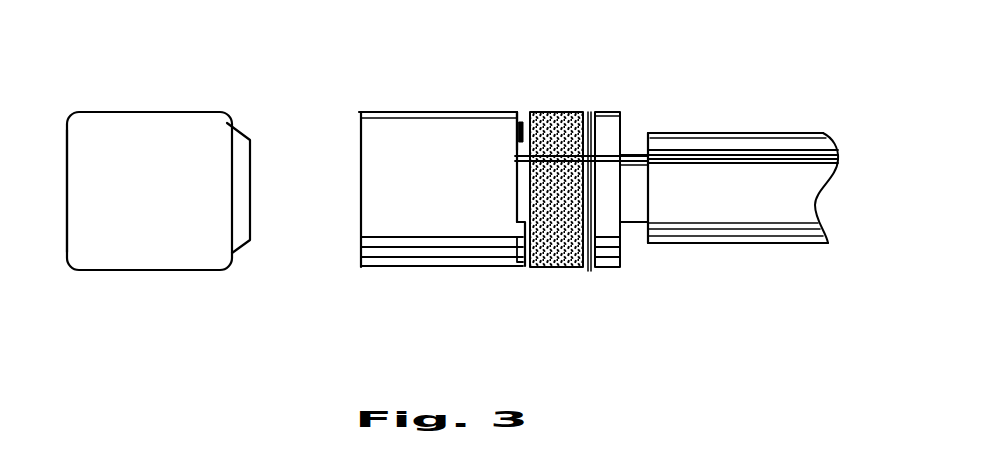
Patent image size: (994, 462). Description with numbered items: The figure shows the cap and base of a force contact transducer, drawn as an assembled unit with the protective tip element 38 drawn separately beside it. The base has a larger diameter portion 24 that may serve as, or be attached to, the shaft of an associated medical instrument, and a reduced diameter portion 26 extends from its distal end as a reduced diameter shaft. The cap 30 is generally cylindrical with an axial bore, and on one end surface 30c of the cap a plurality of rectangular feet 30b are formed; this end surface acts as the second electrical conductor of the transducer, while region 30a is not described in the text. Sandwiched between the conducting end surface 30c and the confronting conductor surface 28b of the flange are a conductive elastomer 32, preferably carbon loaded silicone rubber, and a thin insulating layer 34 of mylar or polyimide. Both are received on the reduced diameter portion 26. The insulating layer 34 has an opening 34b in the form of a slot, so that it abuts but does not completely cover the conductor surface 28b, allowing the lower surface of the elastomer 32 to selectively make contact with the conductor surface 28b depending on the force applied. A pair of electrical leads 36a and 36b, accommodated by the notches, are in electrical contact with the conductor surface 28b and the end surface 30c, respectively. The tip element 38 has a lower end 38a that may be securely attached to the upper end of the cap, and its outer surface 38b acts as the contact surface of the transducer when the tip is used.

The larger diameter portion 24 is at (752, 245).
The reduced diameter portion 26 is at (638, 223).
The conductor surface 28b is at (593, 112).
The cap 30 is at (432, 112).
The housing bottom lip 30a is at (519, 262).
The rectangular feet 30b is at (528, 268).
The end surface 30c is at (516, 112).
The conductive elastomer 32 is at (562, 267).
The insulating layer 34 is at (588, 268).
The opening 34b is at (588, 111).
The electrical lead 36a is at (839, 161).
The electrical lead 36b is at (837, 153).
The tip element 38 is at (137, 120).
The lower end 38a is at (238, 135).
The outer surface 38b is at (64, 130).